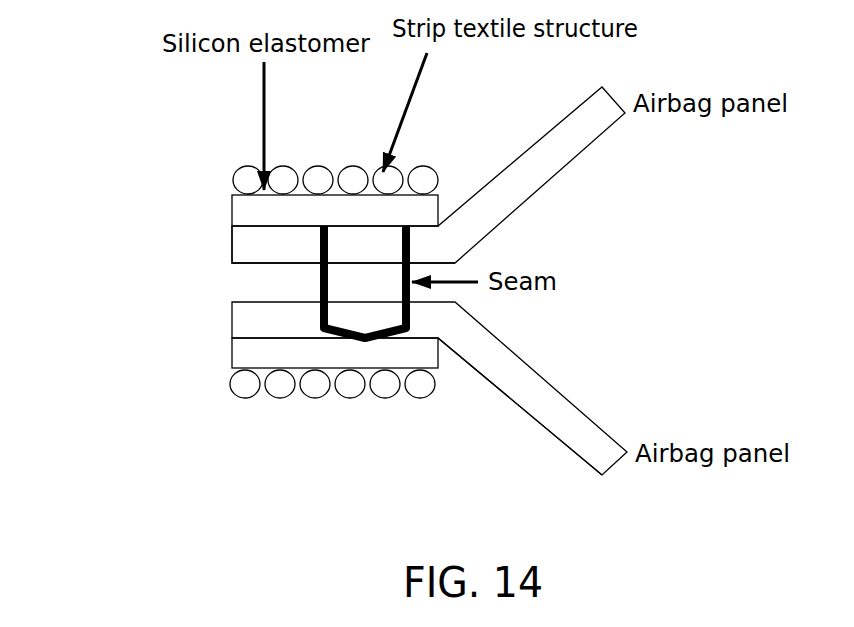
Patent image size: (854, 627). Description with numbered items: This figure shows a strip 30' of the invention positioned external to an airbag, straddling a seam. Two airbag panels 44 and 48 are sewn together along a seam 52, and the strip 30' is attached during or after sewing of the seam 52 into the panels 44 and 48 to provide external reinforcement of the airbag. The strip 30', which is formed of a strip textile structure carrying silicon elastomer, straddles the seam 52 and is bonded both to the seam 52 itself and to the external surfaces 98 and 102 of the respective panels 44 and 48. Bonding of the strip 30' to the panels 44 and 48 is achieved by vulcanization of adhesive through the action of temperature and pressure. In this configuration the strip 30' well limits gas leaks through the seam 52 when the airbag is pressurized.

The strip 30' is at (290, 194).
The airbag panel 44 is at (540, 152).
The airbag panel 48 is at (575, 425).
The seam 52 is at (330, 288).
The external surface 98 is at (232, 247).
The external surface 102 is at (483, 382).